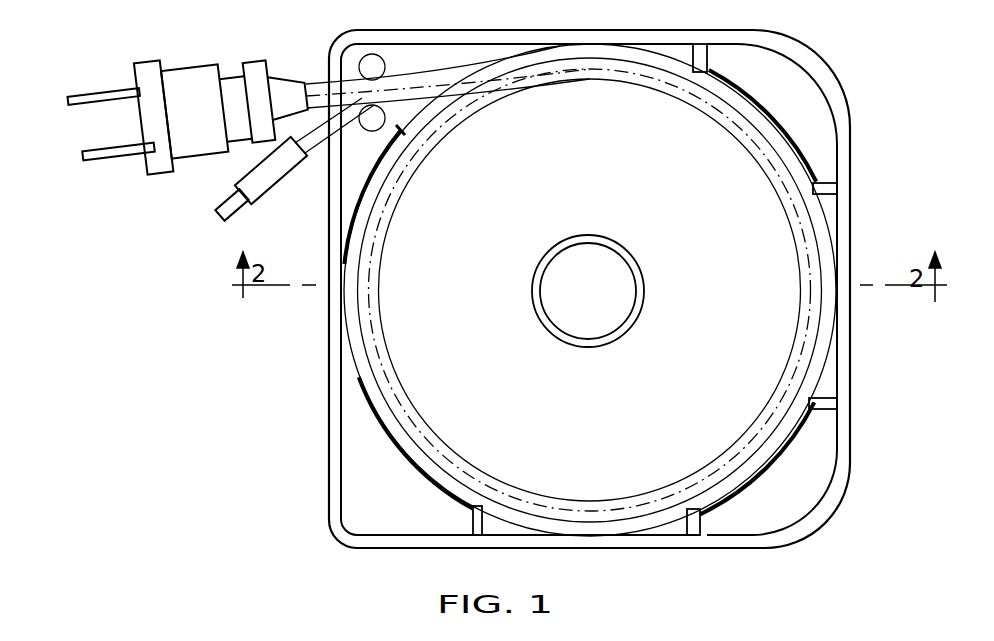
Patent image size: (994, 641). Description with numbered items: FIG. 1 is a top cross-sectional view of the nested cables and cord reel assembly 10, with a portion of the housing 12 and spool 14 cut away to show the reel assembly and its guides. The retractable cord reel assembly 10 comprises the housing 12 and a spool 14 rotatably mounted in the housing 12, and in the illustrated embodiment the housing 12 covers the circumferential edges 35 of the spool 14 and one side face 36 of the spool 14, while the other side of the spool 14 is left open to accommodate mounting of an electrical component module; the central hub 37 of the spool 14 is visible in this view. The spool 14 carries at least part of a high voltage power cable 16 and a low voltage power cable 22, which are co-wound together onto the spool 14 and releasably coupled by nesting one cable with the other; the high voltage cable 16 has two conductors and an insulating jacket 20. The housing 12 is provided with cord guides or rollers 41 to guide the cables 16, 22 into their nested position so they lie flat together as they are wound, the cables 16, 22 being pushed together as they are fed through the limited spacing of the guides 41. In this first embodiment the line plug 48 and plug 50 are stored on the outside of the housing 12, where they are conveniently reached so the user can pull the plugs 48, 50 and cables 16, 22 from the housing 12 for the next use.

The retractable cord reel assembly 10 is at (270, 383).
The housing 12 is at (851, 152).
The spool 14 is at (777, 330).
The high voltage power cable 16 is at (316, 87).
The insulating jacket 20 is at (327, 93).
The low voltage power cable 22 is at (318, 150).
The circumferential edges 35 is at (818, 370).
The side face 36 is at (753, 397).
The hub 37 is at (613, 268).
The cord guides or rollers 41 is at (384, 116).
The line plug 48 is at (203, 77).
The plug 50 is at (250, 176).